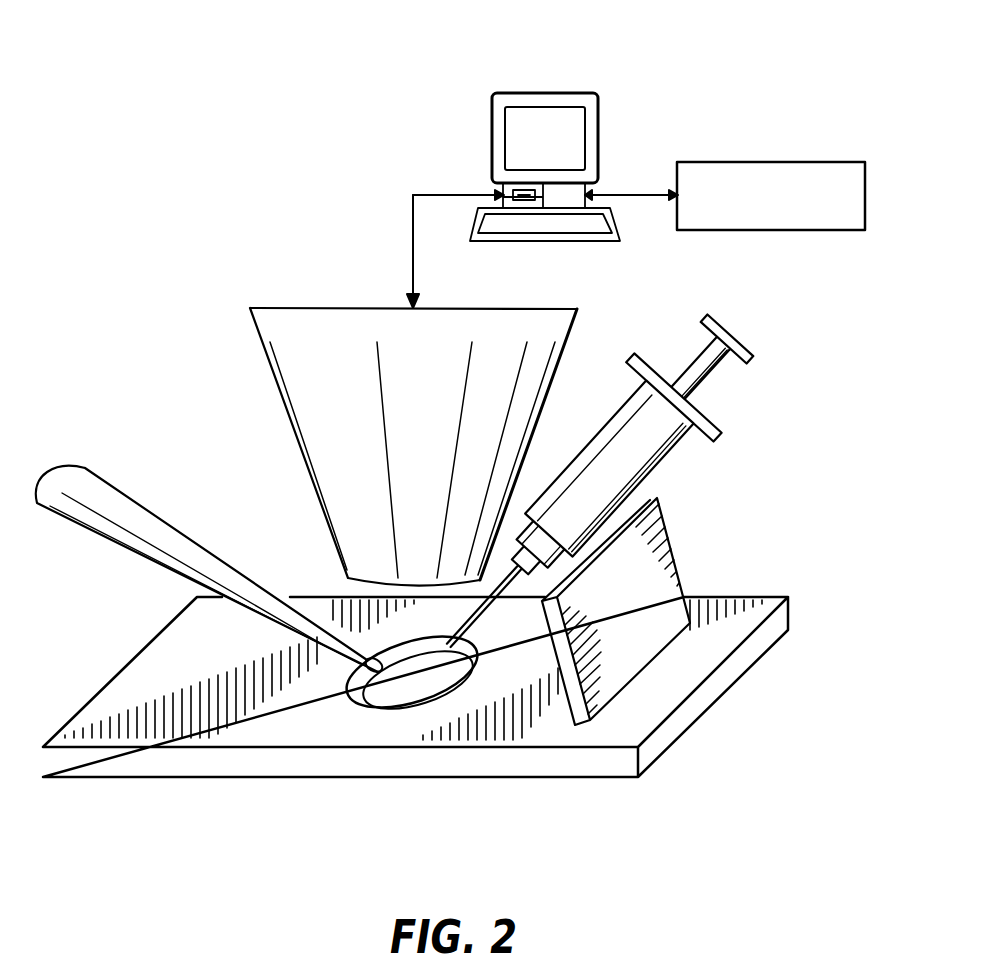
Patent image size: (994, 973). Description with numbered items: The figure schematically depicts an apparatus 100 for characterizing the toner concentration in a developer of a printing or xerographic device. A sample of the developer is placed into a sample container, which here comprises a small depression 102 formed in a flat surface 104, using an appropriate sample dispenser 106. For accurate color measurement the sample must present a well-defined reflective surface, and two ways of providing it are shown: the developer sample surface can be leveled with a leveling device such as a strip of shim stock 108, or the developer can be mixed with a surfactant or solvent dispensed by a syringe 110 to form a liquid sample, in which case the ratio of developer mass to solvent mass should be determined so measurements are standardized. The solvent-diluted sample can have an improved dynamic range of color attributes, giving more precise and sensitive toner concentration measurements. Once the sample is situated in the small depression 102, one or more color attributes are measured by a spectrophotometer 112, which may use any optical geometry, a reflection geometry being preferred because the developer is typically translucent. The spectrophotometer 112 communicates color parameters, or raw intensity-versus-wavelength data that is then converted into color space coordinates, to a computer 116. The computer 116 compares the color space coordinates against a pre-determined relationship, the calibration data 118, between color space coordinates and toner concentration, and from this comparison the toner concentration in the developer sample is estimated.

The apparatus 100 is at (148, 200).
The small depression 102 is at (415, 686).
The flat surface 104 is at (182, 760).
The sample dispenser 106 is at (132, 507).
The strip of shim stock 108 is at (662, 565).
The syringe 110 is at (733, 342).
The spectrophotometer 112 is at (567, 327).
The computer 116 is at (600, 152).
The calibration data 118 is at (770, 162).